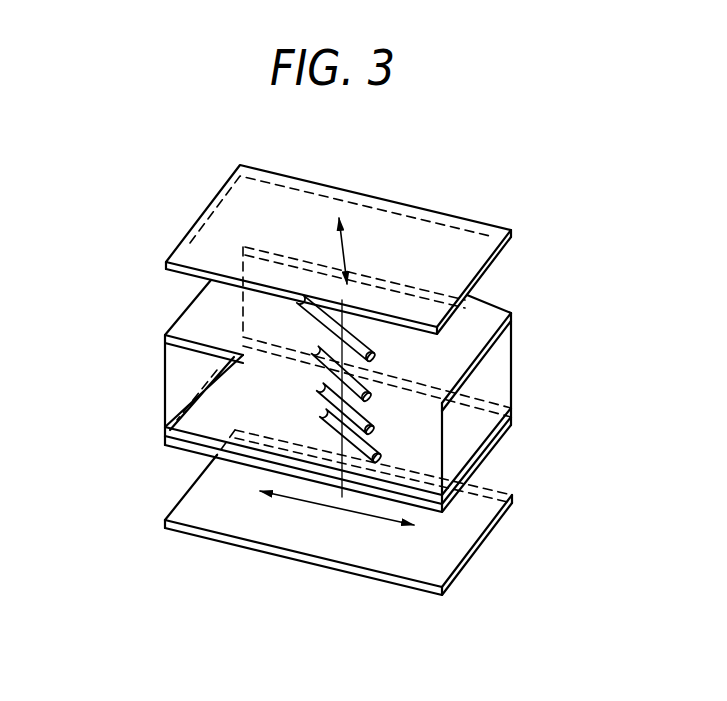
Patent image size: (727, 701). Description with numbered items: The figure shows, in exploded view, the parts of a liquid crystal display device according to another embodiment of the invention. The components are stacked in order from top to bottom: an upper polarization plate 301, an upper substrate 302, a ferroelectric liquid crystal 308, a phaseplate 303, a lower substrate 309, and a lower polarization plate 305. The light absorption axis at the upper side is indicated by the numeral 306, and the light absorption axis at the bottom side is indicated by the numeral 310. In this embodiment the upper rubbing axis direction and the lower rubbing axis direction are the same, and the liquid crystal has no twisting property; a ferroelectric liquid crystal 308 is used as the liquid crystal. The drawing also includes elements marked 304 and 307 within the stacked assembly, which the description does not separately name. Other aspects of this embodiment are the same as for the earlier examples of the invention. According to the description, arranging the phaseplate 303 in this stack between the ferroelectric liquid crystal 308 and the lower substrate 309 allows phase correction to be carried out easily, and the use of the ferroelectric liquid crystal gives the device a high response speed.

The upper polarization plate 301 is at (508, 251).
The upper substrate 302 is at (511, 316).
The phaseplate 303 is at (511, 408).
The lower plate 304 is at (383, 463).
The lower polarization plate 305 is at (495, 526).
The light absorption axis 306 is at (338, 233).
The rod 307 is at (310, 300).
The ferroelectric liquid crystal 308 is at (320, 362).
The lower substrate 309 is at (165, 445).
The light absorption axis 310 is at (283, 497).